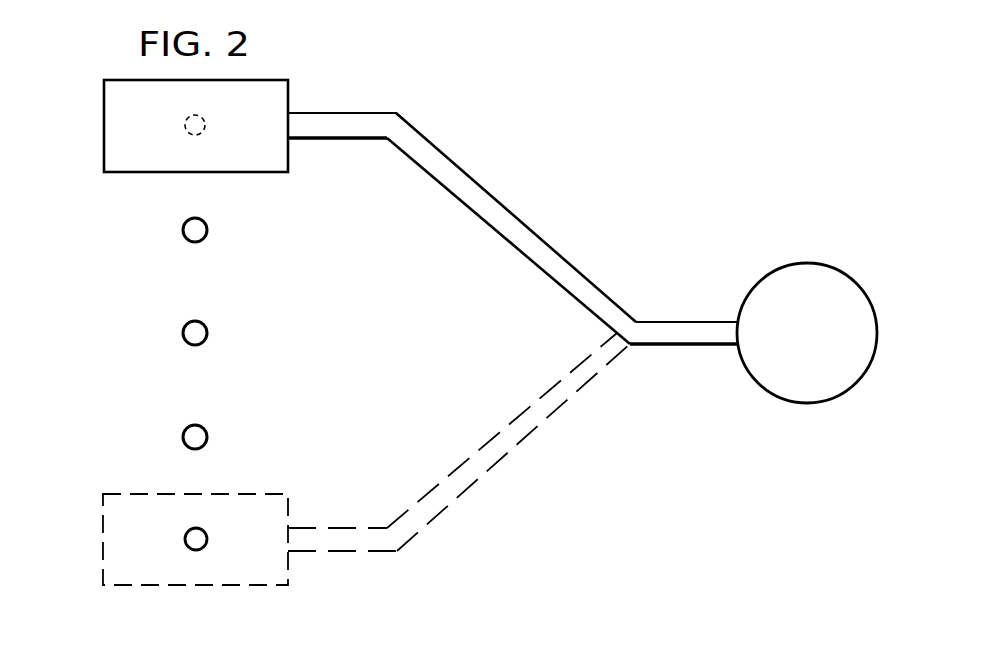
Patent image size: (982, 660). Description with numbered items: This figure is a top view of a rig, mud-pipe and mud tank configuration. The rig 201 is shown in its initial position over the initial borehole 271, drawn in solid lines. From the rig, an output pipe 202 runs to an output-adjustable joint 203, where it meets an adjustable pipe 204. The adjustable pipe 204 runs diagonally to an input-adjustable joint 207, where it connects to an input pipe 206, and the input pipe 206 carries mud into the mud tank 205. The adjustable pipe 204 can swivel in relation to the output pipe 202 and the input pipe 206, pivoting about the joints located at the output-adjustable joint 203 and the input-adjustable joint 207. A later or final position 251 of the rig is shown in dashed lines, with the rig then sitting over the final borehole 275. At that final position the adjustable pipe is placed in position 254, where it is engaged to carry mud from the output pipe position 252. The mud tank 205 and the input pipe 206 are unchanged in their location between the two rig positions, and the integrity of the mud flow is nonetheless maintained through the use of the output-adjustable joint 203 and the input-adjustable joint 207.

The rig 201 is at (104, 125).
The initial borehole 271 is at (188, 116).
The output pipe 202 is at (340, 112).
The output-adjustable joint 203 is at (397, 112).
The adjustable pipe 204 is at (543, 203).
The mud tank 205 is at (826, 348).
The input pipe 206 is at (688, 346).
The input-adjustable joint 207 is at (637, 321).
The final position 251 is at (103, 548).
The final borehole 275 is at (203, 534).
The output pipe position 252 is at (350, 553).
The adjustable pipe position 254 is at (508, 456).